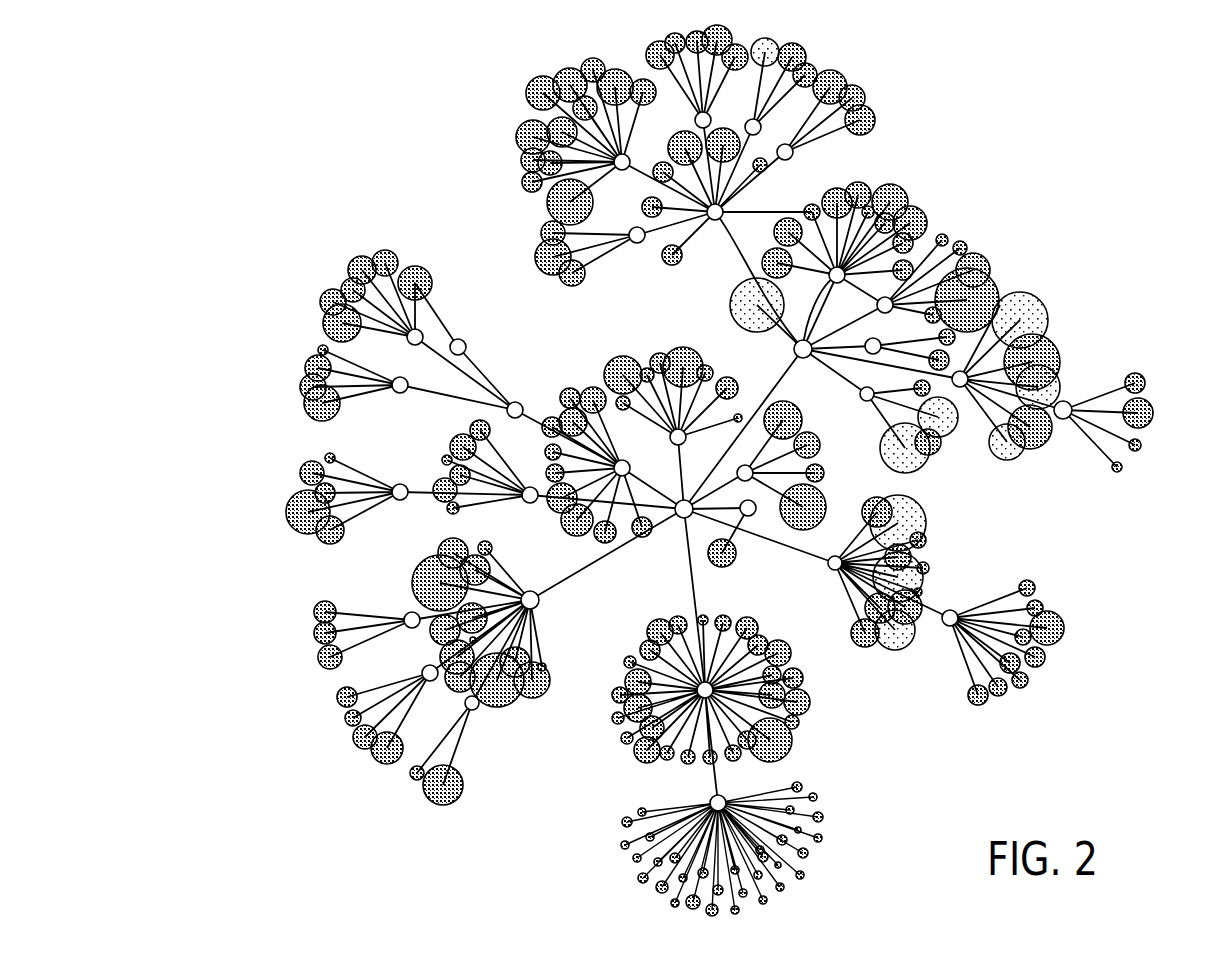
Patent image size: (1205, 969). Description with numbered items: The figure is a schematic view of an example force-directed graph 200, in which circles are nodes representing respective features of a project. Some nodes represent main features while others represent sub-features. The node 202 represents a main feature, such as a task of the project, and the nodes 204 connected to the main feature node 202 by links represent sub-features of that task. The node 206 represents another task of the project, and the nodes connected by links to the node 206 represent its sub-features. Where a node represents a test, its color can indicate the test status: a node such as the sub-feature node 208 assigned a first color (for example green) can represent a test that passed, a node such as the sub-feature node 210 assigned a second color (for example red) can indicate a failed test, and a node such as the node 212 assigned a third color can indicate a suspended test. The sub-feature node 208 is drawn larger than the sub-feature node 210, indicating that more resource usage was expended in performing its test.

The force-directed graph 200 is at (237, 918).
The main feature node 202 is at (794, 349).
The sub-feature nodes 204 is at (772, 230).
The node 206 is at (963, 388).
The sub-feature node 208 is at (1036, 306).
The sub-feature node 210 is at (1010, 457).
The node 212 is at (926, 458).